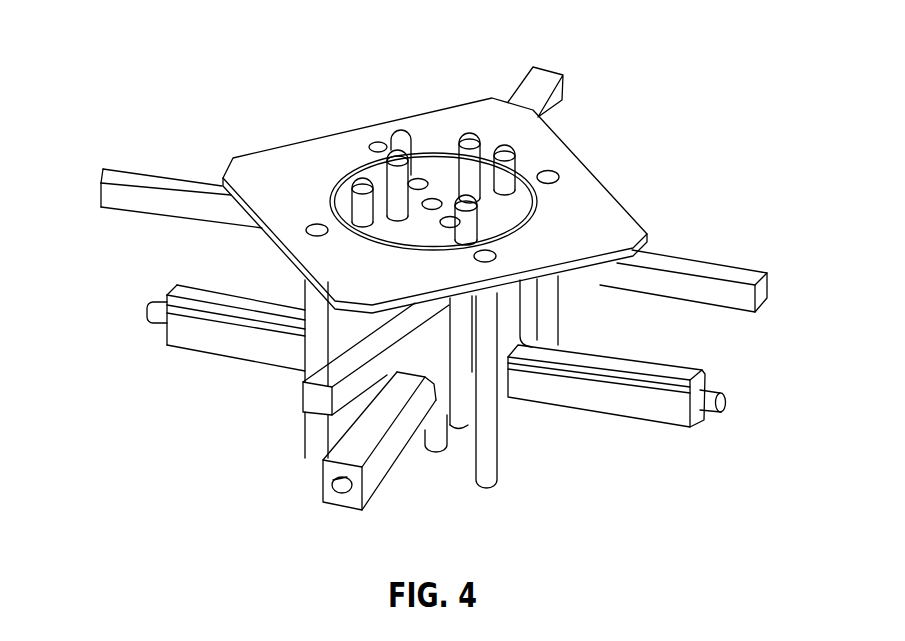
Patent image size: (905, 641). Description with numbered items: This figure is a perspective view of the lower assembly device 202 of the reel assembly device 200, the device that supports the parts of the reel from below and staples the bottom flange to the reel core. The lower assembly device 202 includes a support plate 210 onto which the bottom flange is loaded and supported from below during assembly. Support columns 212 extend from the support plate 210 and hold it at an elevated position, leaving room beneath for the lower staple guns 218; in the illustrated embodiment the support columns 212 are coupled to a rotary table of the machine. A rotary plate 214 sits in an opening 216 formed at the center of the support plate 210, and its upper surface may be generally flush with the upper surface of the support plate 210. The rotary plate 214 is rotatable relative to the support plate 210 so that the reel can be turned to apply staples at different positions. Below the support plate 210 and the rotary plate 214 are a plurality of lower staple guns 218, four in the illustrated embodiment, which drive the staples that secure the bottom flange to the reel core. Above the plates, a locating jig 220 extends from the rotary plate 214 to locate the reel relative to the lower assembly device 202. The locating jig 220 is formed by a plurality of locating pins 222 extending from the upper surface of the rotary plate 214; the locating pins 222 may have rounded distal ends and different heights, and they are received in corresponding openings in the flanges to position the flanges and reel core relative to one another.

The reel assembly device 200 is at (251, 50).
The lower assembly device 202 is at (621, 91).
The support plate 210 is at (580, 200).
The support columns 212 is at (487, 454).
The rotary plate 214 is at (517, 202).
The opening 216 is at (522, 228).
The lower staple guns 218 is at (427, 404).
The locating jig 220 is at (467, 131).
The locating pins 222 is at (388, 152).